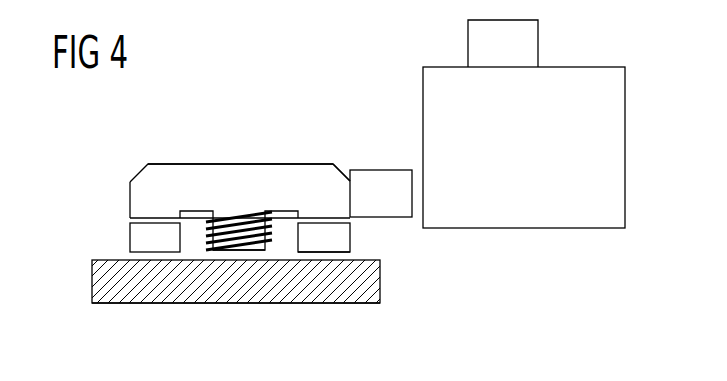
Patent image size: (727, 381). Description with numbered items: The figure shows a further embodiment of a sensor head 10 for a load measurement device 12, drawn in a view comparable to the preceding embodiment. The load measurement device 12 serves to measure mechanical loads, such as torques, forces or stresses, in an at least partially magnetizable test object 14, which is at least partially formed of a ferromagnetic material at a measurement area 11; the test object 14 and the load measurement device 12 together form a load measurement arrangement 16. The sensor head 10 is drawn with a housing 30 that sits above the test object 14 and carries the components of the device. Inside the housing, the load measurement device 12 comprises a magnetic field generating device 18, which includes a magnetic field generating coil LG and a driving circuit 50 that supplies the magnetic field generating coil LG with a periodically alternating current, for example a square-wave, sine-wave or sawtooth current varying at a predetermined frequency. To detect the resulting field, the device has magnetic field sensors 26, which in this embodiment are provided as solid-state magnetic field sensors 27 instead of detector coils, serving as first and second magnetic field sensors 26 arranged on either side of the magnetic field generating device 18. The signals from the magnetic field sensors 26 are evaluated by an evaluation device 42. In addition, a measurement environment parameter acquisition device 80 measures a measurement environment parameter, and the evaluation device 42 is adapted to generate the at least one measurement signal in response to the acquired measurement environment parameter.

The sensor head 10 is at (321, 143).
The measurement area 11 is at (280, 312).
The load measurement device 12 is at (267, 106).
The test object 14 is at (150, 303).
The load measurement arrangement 16 is at (104, 198).
The magnetic field generating device 18 is at (226, 222).
The magnetic field sensors 26 is at (130, 238).
The solid-state magnetic field sensors 27 is at (328, 252).
The housing 30 is at (175, 171).
The evaluation device 42 is at (524, 147).
The driving circuit 50 is at (503, 43).
The measurement environment parameter acquisition device 80 is at (381, 193).
The magnetic field generating coil LG is at (258, 250).